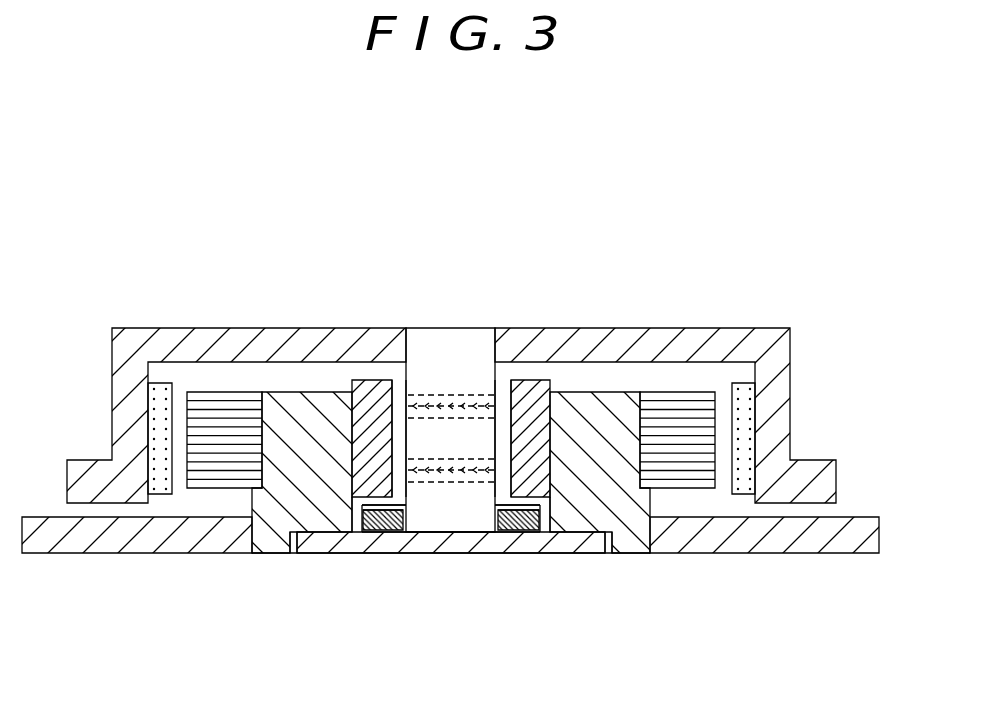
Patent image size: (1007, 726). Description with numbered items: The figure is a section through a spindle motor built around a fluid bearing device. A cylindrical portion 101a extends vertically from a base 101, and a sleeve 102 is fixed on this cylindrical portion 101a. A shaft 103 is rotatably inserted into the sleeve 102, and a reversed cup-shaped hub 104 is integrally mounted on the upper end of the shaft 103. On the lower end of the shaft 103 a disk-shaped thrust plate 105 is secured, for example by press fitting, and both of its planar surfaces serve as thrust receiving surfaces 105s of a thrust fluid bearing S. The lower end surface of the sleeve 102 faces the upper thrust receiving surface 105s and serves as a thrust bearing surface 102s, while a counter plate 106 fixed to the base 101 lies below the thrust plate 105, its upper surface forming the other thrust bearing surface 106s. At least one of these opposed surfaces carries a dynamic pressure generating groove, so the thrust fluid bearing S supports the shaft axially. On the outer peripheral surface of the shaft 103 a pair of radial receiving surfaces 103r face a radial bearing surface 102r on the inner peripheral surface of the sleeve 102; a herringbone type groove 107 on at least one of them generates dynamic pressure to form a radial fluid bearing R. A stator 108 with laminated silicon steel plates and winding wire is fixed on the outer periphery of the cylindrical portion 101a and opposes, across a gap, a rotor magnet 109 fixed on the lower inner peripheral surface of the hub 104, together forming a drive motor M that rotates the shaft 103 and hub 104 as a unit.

The base 101 is at (727, 540).
The cylindrical portion 101a is at (592, 468).
The sleeve 102 is at (530, 385).
The radial bearing surface 102r is at (392, 478).
The thrust bearing surface 102s is at (378, 506).
The shaft 103 is at (496, 352).
The radial receiving surface 103r is at (407, 480).
The hub 104 is at (253, 338).
The thrust plate 105 is at (527, 517).
The thrust receiving surface 105s is at (512, 508).
The counter plate 106 is at (315, 545).
The thrust bearing surface 106s is at (404, 518).
The herringbone type groove 107 is at (477, 458).
The stator 108 is at (700, 388).
The rotor magnet 109 is at (745, 438).
The radial fluid bearing R is at (523, 256).
The thrust fluid bearing S is at (515, 636).
The drive motor M is at (872, 350).